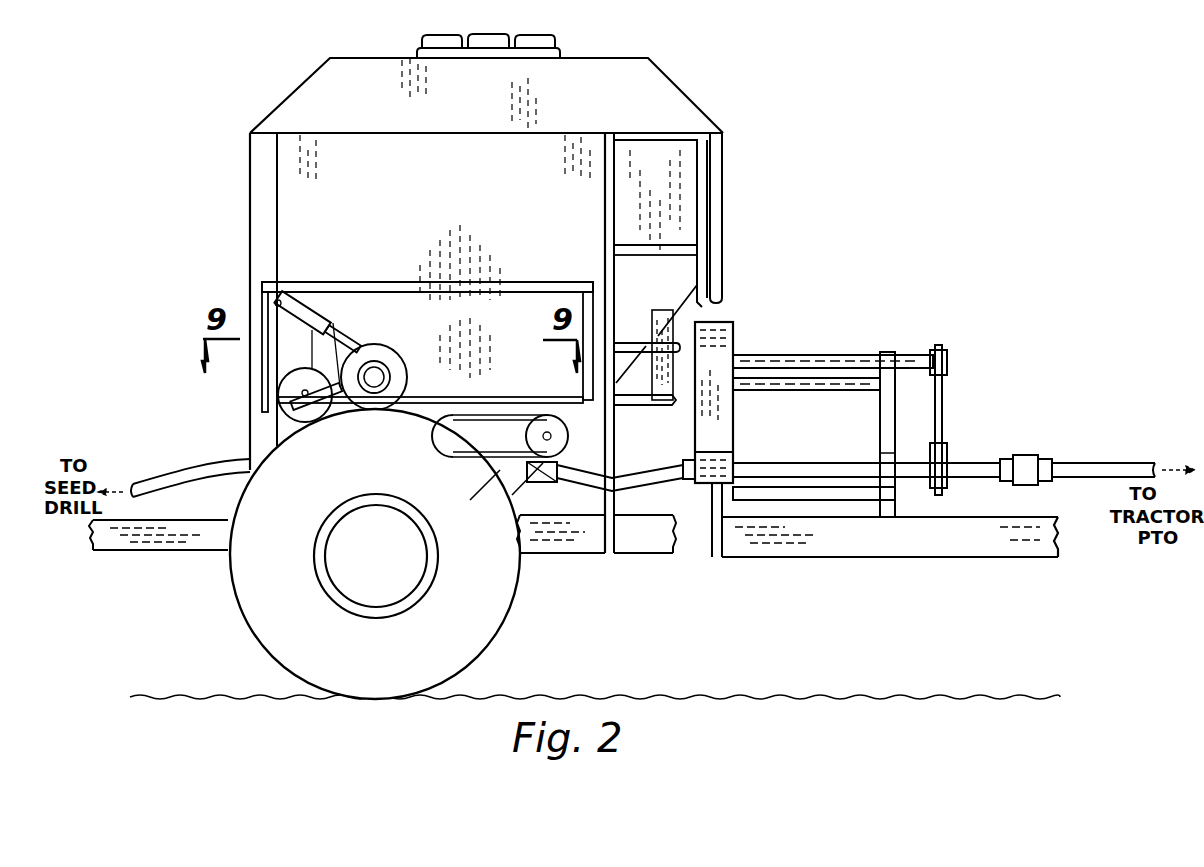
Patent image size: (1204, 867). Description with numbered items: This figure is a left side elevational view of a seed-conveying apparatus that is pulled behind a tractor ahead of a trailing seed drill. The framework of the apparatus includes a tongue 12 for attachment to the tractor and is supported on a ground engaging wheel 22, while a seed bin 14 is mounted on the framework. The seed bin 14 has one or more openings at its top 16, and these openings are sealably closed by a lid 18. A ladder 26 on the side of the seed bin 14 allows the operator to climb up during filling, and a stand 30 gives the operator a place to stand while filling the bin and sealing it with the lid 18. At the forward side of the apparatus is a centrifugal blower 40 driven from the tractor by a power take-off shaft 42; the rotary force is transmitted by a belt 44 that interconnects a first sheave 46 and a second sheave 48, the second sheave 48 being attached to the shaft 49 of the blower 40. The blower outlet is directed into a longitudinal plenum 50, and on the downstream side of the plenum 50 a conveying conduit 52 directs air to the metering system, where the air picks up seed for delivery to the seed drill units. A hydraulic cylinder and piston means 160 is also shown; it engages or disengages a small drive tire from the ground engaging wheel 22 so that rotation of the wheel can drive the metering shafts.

The tongue 12 is at (887, 557).
The seed bin 14 is at (686, 96).
The top 16 is at (598, 58).
The lid 18 is at (497, 36).
The ground engaging wheel 22 is at (505, 632).
The ladder 26 is at (703, 180).
The stand 30 is at (318, 283).
The hydraulic cylinder and piston means 160 is at (265, 284).
The blower 40 is at (733, 322).
The power take-off shaft 42 is at (972, 478).
The belt 44 is at (943, 386).
The sheave 46 is at (947, 450).
The sheave 48 is at (947, 356).
The shaft 49 is at (810, 355).
The longitudinal plenum 50 is at (733, 455).
The conveying conduit 52 is at (582, 485).